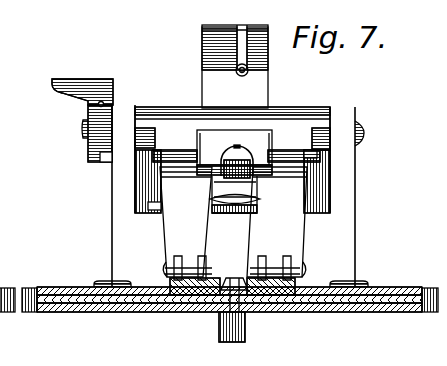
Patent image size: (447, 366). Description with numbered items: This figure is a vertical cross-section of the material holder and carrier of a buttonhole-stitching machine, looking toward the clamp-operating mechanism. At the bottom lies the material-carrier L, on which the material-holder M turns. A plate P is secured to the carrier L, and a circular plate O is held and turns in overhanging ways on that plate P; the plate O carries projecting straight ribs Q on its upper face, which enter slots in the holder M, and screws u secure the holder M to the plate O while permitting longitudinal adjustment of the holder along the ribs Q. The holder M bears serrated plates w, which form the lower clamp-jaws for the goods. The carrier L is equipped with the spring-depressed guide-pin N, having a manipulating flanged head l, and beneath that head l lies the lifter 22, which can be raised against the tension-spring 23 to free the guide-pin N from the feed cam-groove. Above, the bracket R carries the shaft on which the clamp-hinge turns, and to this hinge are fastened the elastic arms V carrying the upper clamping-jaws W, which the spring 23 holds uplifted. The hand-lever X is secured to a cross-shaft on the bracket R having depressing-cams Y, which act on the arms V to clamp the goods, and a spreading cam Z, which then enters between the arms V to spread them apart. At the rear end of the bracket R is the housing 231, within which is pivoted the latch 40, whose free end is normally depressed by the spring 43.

The latch 40 is at (241, 30).
The spring 43 is at (249, 73).
The housing 231 is at (235, 66).
The tension-spring 23 is at (222, 189).
The lifter 22 is at (217, 210).
The hand-lever X is at (82, 111).
The depressing-cams Y is at (232, 132).
The spreading cam Z is at (220, 160).
The bracket R is at (233, 196).
The elastic arms V is at (233, 222).
The upper clamping-jaws W is at (222, 286).
The manipulating flanged head l is at (242, 194).
The material-holder M is at (73, 287).
The screws u is at (104, 281).
The serrated plates w is at (163, 286).
The plate P is at (47, 313).
The material-carrier L is at (72, 311).
The projecting straight ribs Q is at (112, 312).
The circular plate O is at (151, 312).
The spring-depressed guide-pin N is at (232, 343).